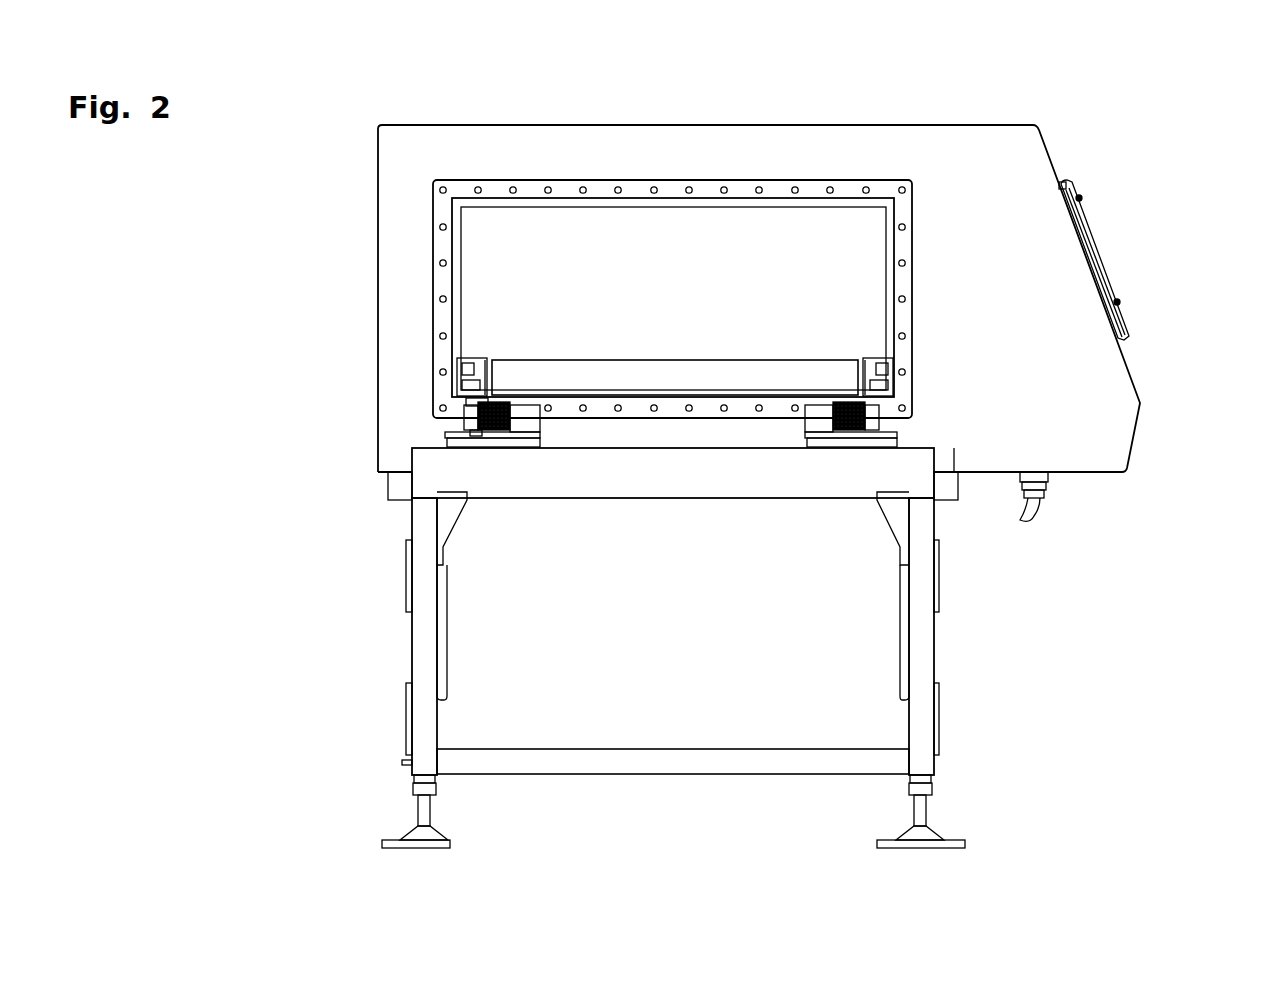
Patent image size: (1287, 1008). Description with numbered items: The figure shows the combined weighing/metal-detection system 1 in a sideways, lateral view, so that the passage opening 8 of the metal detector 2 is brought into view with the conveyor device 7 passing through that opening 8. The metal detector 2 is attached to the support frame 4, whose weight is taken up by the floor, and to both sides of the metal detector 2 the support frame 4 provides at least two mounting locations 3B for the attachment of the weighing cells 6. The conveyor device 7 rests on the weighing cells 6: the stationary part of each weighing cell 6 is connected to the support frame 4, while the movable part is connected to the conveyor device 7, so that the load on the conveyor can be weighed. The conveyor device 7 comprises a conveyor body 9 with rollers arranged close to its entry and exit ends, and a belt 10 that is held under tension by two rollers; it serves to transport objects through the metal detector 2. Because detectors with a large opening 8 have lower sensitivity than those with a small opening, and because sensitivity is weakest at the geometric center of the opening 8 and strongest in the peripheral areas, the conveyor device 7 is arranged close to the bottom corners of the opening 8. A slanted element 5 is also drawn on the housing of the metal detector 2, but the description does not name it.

The combined weighing/metal-detection system 1 is at (240, 704).
The metal detector 2 is at (1146, 492).
The mounting locations 3B is at (822, 435).
The support frame 4 is at (936, 655).
The handle 5 is at (1100, 252).
The weighing cells 6 is at (458, 420).
The conveyor device 7 is at (610, 350).
The passage opening 8 is at (785, 255).
The conveyor body 9 is at (520, 357).
The belt 10 is at (505, 297).